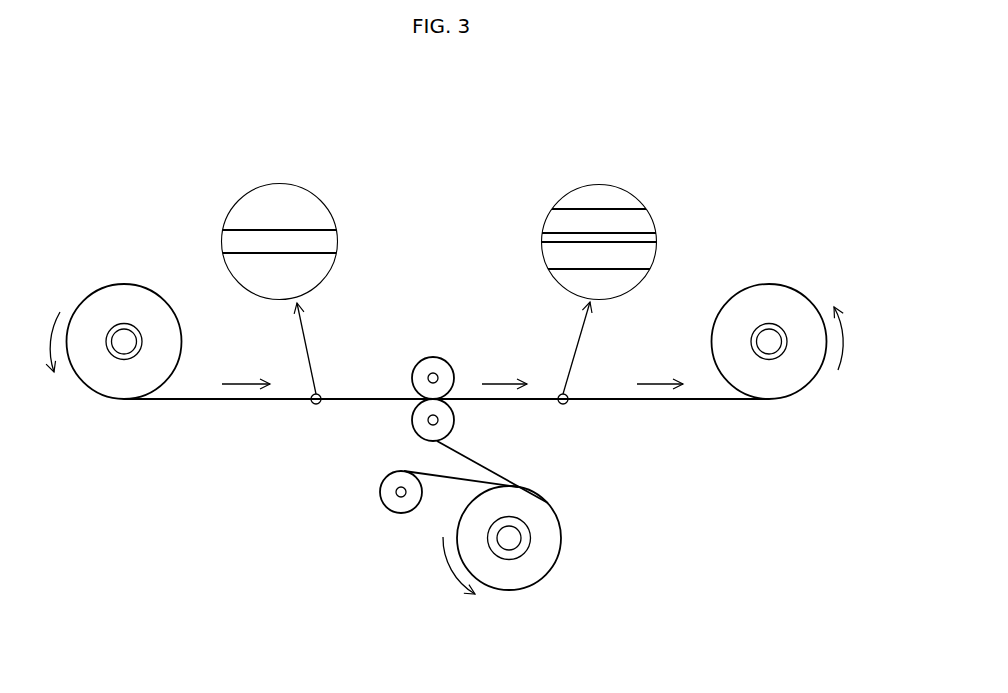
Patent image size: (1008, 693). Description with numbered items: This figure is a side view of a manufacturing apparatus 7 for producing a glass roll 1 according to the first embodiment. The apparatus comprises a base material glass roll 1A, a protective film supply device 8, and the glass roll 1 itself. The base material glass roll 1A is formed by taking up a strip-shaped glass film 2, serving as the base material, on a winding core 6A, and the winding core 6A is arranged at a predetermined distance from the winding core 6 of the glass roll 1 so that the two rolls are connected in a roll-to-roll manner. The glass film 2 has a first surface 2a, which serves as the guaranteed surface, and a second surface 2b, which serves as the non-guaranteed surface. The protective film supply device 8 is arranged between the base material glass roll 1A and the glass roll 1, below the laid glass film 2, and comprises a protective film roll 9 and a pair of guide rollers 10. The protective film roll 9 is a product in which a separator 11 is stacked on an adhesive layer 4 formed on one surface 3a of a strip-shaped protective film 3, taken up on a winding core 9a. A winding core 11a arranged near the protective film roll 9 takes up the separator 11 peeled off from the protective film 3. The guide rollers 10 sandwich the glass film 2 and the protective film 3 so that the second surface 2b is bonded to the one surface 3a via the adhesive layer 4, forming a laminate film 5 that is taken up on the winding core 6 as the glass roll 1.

The glass roll 1 is at (805, 281).
The base material glass roll 1A is at (90, 283).
The glass film 2 is at (236, 403).
The first surface 2a is at (247, 229).
The second surface 2b is at (246, 254).
The protective film 3 is at (638, 258).
The one surface 3a is at (601, 241).
The adhesive layer 4 is at (660, 237).
The laminate film 5 is at (622, 403).
The winding core 6 is at (784, 352).
The winding core 6A is at (110, 353).
The manufacturing apparatus 7 is at (462, 171).
The protective film supply device 8 is at (486, 606).
The protective film roll 9 is at (565, 530).
The winding core 9a is at (527, 550).
The guide rollers 10 is at (440, 357).
The separator 11 is at (452, 482).
The winding core 11a is at (394, 500).